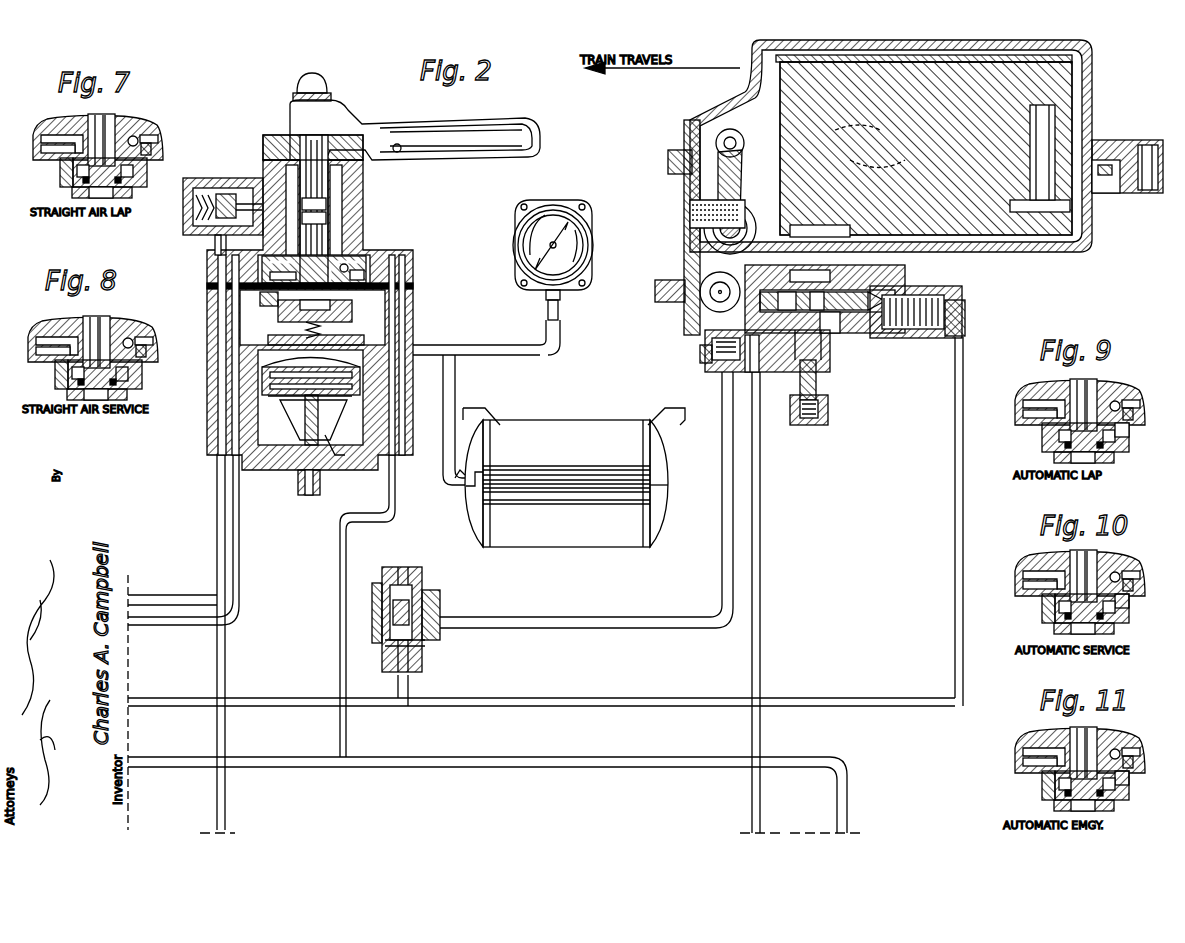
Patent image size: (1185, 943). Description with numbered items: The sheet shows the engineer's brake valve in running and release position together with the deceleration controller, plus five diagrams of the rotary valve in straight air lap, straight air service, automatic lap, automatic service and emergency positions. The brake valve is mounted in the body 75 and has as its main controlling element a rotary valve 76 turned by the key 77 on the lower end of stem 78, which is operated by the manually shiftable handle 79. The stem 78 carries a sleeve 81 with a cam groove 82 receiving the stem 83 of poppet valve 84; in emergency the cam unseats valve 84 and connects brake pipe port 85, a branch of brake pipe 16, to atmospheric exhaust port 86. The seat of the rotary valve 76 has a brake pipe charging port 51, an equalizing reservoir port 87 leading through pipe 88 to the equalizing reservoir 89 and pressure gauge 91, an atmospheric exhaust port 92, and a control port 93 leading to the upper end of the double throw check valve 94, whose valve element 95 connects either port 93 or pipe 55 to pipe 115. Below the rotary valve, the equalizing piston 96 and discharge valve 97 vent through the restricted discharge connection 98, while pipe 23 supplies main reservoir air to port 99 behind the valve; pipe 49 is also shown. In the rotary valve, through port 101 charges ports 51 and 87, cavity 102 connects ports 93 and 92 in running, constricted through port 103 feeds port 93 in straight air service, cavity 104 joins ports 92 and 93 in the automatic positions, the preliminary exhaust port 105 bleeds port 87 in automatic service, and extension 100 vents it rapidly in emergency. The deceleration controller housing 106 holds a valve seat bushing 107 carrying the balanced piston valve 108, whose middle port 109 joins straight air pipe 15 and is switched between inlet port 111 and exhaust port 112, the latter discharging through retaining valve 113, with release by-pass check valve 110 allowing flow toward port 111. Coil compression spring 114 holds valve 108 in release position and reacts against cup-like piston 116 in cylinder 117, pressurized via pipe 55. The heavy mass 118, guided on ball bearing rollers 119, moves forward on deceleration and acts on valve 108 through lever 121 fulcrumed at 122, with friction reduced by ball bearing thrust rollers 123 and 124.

In FIG. 2, the straight air pipe 15 is at (762, 530).
In FIG. 2, the brake pipe 16 is at (216, 500).
In FIG. 2, the pipe 23 is at (338, 573).
In FIG. 2, the pipe 49 is at (168, 620).
In FIG. 7, the brake pipe charging port 51 is at (98, 132).
In FIG. 8, the brake pipe charging port 51 is at (90, 334).
In FIG. 9, the brake pipe charging port 51 is at (1077, 397).
In FIG. 10, the brake pipe charging port 51 is at (1072, 567).
In FIG. 11, the brake pipe charging port 51 is at (1076, 743).
In FIG. 2, the brake pipe charging port 51 is at (292, 278).
In FIG. 2, the pipe 55 is at (172, 703).
In FIG. 2, the body 75 is at (414, 334).
In FIG. 7, the rotary valve 76 is at (123, 172).
In FIG. 8, the rotary valve 76 is at (120, 378).
In FIG. 9, the rotary valve 76 is at (1069, 441).
In FIG. 10, the rotary valve 76 is at (1109, 611).
In FIG. 11, the rotary valve 76 is at (1109, 788).
In FIG. 2, the rotary valve 76 is at (352, 310).
In FIG. 7, the key 77 is at (120, 192).
In FIG. 8, the key 77 is at (112, 399).
In FIG. 9, the key 77 is at (1100, 461).
In FIG. 10, the key 77 is at (1100, 631).
In FIG. 11, the key 77 is at (1100, 809).
In FIG. 2, the key 77 is at (280, 338).
In FIG. 7, the stem 78 is at (122, 135).
In FIG. 8, the stem 78 is at (112, 337).
In FIG. 9, the stem 78 is at (1097, 401).
In FIG. 10, the stem 78 is at (1100, 570).
In FIG. 11, the stem 78 is at (1098, 746).
In FIG. 2, the stem 78 is at (338, 207).
In FIG. 2, the handle 79 is at (406, 132).
In FIG. 2, the sleeve 81 is at (335, 177).
In FIG. 2, the cam groove 82 is at (292, 212).
In FIG. 2, the stem 83 is at (292, 224).
In FIG. 2, the poppet valve 84 is at (226, 194).
In FIG. 2, the brake pipe port 85 is at (215, 240).
In FIG. 2, the atmospheric exhaust port 86 is at (224, 252).
In FIG. 7, the equalizing reservoir port 87 is at (43, 160).
In FIG. 8, the equalizing reservoir port 87 is at (41, 362).
In FIG. 9, the equalizing reservoir port 87 is at (1026, 428).
In FIG. 10, the equalizing reservoir port 87 is at (1031, 599).
In FIG. 11, the equalizing reservoir port 87 is at (1026, 775).
In FIG. 2, the equalizing reservoir port 87 is at (340, 281).
In FIG. 2, the pipe 88 is at (448, 378).
In FIG. 2, the equalizing reservoir 89 is at (527, 425).
In FIG. 2, the pressure gauge 91 is at (522, 236).
In FIG. 7, the atmospheric exhaust port 92 is at (156, 132).
In FIG. 8, the atmospheric exhaust port 92 is at (143, 332).
In FIG. 9, the atmospheric exhaust port 92 is at (1133, 397).
In FIG. 10, the atmospheric exhaust port 92 is at (1136, 566).
In FIG. 11, the atmospheric exhaust port 92 is at (1136, 744).
In FIG. 2, the atmospheric exhaust port 92 is at (370, 266).
In FIG. 7, the control port 93 is at (165, 145).
In FIG. 8, the control port 93 is at (157, 344).
In FIG. 9, the control port 93 is at (1145, 415).
In FIG. 10, the control port 93 is at (1146, 581).
In FIG. 11, the control port 93 is at (1146, 758).
In FIG. 2, the control port 93 is at (372, 274).
In FIG. 2, the double throw check valve 94 is at (432, 604).
In FIG. 2, the valve element 95 is at (432, 648).
In FIG. 2, the equalizing piston 96 is at (365, 401).
In FIG. 2, the discharge valve 97 is at (336, 458).
In FIG. 2, the restricted discharge connection 98 is at (310, 496).
In FIG. 2, the port 99 is at (395, 372).
In FIG. 11, the extension 100 is at (1027, 790).
In FIG. 7, the through port 101 is at (47, 175).
In FIG. 8, the through port 101 is at (44, 376).
In FIG. 2, the through port 101 is at (285, 298).
In FIG. 2, the cavity 102 is at (385, 296).
In FIG. 8, the constricted through port 103 is at (146, 372).
In FIG. 9, the cavity 104 is at (1141, 437).
In FIG. 10, the cavity 104 is at (1142, 604).
In FIG. 11, the cavity 104 is at (1142, 780).
In FIG. 10, the preliminary exhaust port 105 is at (1028, 615).
In FIG. 2, the housing 106 is at (679, 251).
In FIG. 2, the valve seat bushing 107 is at (852, 330).
In FIG. 2, the balanced piston valve 108 is at (712, 345).
In FIG. 2, the middle port 109 is at (818, 372).
In FIG. 2, the release by-pass check valve 110 is at (702, 356).
In FIG. 2, the inlet port 111 is at (760, 372).
In FIG. 2, the exhaust port 112 is at (842, 340).
In FIG. 2, the retaining valve 113 is at (828, 408).
In FIG. 2, the coil compression spring 114 is at (950, 293).
In FIG. 2, the pipe 115 is at (615, 616).
In FIG. 2, the cup-like piston 116 is at (962, 318).
In FIG. 2, the cylinder 117 is at (904, 330).
In FIG. 2, the heavy mass 118 is at (1003, 240).
In FIG. 2, the ball bearing rollers 119 is at (736, 180).
In FIG. 2, the lever 121 is at (700, 176).
In FIG. 2, the fulcrum 122 is at (704, 230).
In FIG. 2, the ball bearing thrust roller 123 is at (740, 130).
In FIG. 2, the ball bearing thrust roller 124 is at (702, 310).